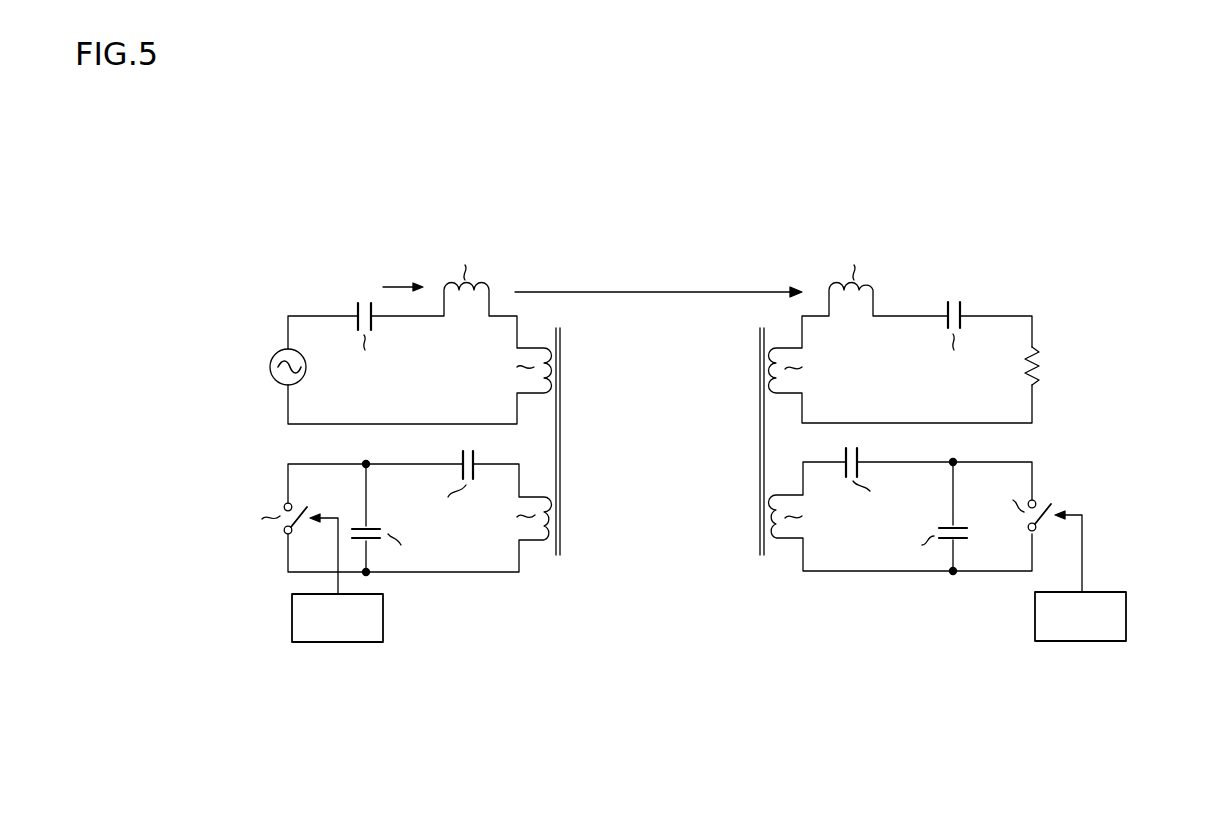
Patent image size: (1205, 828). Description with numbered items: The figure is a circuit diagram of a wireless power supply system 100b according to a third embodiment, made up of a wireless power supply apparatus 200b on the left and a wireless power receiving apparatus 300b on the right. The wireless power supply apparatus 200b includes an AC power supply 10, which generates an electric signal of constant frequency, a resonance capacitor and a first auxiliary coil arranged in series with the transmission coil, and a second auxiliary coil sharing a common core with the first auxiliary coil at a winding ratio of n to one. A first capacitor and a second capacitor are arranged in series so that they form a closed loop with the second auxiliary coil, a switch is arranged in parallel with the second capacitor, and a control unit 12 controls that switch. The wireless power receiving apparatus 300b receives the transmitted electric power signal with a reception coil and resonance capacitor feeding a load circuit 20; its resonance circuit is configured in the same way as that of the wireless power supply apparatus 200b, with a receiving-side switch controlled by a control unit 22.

The AC power supply 10 is at (270, 379).
The control unit 12 is at (384, 628).
The load circuit 20 is at (1042, 370).
The control unit 22 is at (1127, 626).
The wireless power supply system 100b is at (688, 720).
The wireless power supply apparatus 200b is at (382, 202).
The wireless power receiving apparatus 300b is at (935, 200).